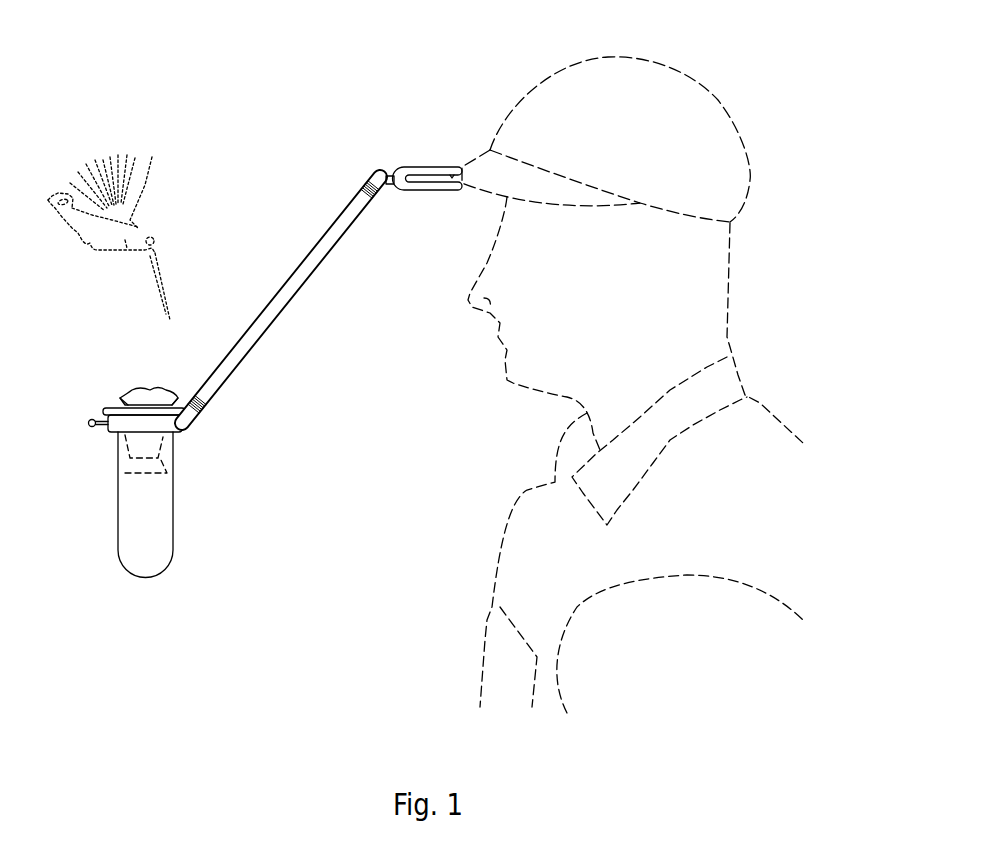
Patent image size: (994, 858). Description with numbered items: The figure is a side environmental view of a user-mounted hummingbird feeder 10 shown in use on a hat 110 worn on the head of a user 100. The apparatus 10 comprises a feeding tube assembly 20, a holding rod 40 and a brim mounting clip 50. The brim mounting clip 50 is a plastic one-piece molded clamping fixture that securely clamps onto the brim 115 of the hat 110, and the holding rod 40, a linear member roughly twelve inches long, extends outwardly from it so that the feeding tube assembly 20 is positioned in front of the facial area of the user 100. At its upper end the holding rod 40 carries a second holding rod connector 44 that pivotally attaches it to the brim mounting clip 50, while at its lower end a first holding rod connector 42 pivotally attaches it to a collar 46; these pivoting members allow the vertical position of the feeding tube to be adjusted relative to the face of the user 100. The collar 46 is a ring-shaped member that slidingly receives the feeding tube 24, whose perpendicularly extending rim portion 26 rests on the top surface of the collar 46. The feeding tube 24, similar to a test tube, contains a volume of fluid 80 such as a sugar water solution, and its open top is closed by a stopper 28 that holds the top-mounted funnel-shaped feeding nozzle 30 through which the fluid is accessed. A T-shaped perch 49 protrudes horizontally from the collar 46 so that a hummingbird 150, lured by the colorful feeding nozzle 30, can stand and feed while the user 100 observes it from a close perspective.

The user-mounted hummingbird feeder 10 is at (205, 156).
The feeding tube assembly 20 is at (247, 492).
The feeding tube 24 is at (120, 560).
The rim portion 26 is at (108, 408).
The stopper 28 is at (158, 458).
The feeding nozzle 30 is at (168, 390).
The holding rod 40 is at (286, 281).
The first holding rod connector 42 is at (190, 425).
The second holding rod connector 44 is at (382, 192).
The collar 46 is at (155, 423).
The perch 49 is at (91, 427).
The brim mounting clip 50 is at (418, 167).
The fluid 80 is at (140, 473).
The user 100 is at (533, 388).
The hat 110 is at (703, 93).
The brim 115 is at (502, 172).
The hummingbird 150 is at (138, 230).